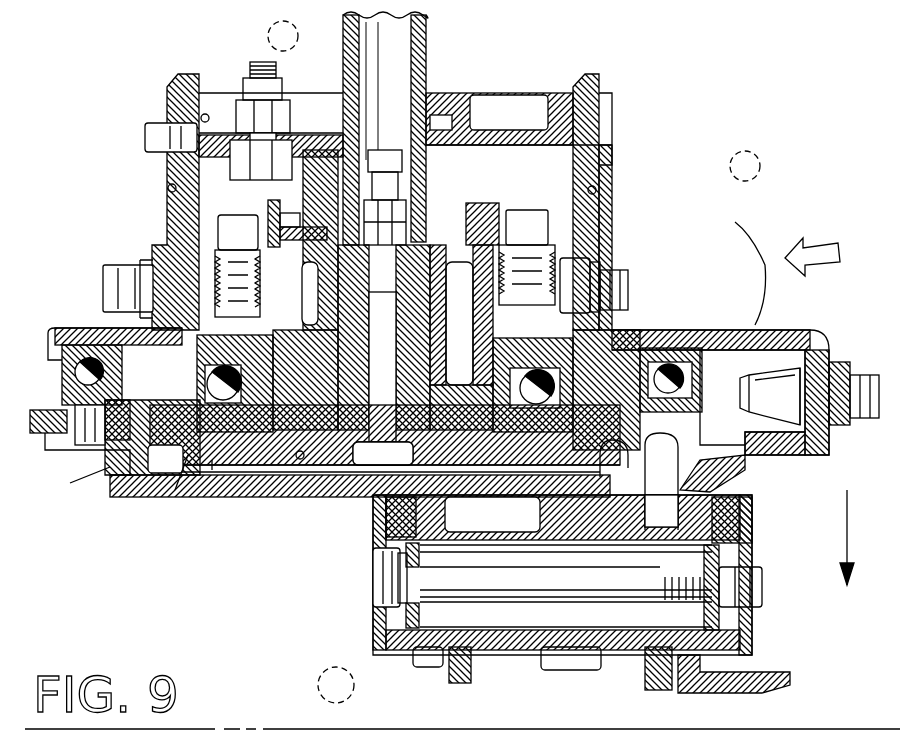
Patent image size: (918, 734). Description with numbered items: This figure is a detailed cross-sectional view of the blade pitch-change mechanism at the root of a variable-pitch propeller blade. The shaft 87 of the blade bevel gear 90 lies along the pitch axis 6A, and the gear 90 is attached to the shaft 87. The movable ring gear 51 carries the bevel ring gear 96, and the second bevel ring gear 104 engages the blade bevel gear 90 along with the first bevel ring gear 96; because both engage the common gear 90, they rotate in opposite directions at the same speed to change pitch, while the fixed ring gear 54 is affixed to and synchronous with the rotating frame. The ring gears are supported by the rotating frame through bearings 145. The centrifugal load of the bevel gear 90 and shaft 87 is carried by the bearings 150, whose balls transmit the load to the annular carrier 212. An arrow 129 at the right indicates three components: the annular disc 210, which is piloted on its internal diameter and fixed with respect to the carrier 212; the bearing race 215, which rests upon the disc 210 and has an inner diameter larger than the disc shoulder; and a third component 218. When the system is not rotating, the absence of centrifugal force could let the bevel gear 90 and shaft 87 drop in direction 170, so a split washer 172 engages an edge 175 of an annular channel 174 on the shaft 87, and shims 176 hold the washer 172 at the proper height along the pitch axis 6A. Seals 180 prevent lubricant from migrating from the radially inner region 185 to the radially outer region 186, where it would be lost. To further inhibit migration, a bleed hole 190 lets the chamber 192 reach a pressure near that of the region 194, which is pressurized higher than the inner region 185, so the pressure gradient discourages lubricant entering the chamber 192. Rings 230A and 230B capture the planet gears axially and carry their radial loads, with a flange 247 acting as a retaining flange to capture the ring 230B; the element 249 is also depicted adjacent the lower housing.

The pitch axis 6A is at (400, 38).
The shaft 87 is at (428, 63).
The seals 180 is at (338, 93).
The radially outer region 186 is at (268, 25).
The region 194 is at (752, 150).
The bleed hole 190 is at (600, 138).
The chamber 192 is at (555, 164).
The edge 175 is at (446, 217).
The annular channel 174 is at (453, 233).
The shims 176 is at (290, 202).
The split washer 172 is at (302, 227).
The annular carrier 212 is at (580, 227).
The annular disc 210 is at (630, 287).
The component 218 is at (188, 358).
The arrow 129 is at (827, 255).
The bearings 145 is at (82, 342).
The bearing race 215 is at (565, 378).
The movable ring gear 51 is at (615, 465).
The bevel ring gear 96 is at (650, 450).
The fixed ring gear 54 is at (695, 481).
The second bevel ring gear 104 is at (110, 467).
The blade bevel gear 90 is at (188, 455).
The bearings 150 is at (212, 460).
The ring 230A is at (383, 510).
The ring 230B is at (722, 498).
The bolt 249 is at (383, 578).
The flange 247 is at (378, 637).
The radially inner region 185 is at (320, 658).
The direction 170 is at (847, 519).